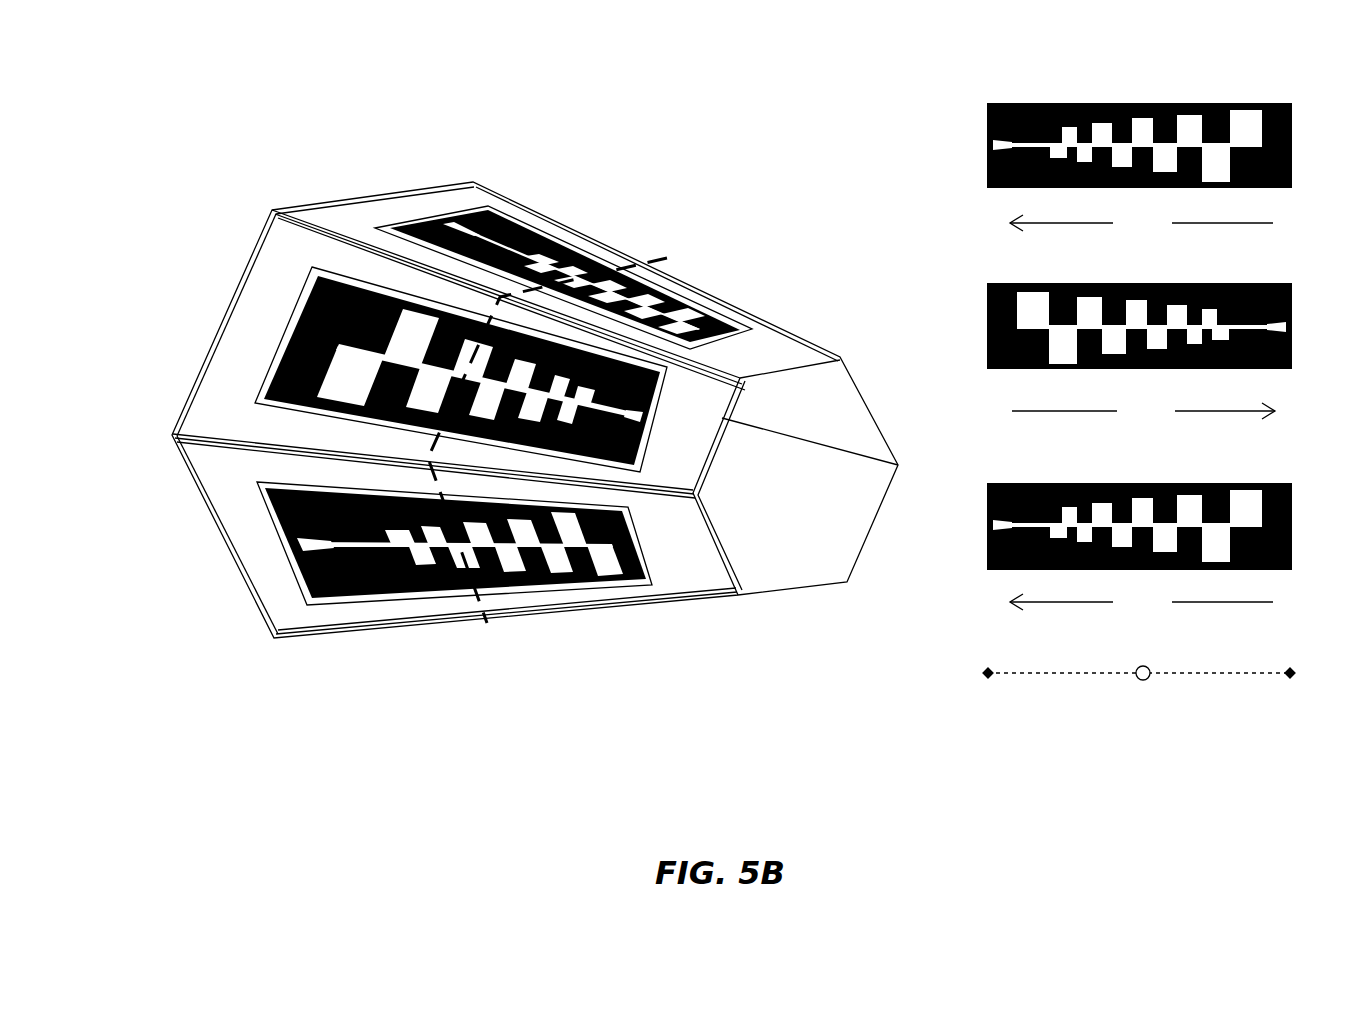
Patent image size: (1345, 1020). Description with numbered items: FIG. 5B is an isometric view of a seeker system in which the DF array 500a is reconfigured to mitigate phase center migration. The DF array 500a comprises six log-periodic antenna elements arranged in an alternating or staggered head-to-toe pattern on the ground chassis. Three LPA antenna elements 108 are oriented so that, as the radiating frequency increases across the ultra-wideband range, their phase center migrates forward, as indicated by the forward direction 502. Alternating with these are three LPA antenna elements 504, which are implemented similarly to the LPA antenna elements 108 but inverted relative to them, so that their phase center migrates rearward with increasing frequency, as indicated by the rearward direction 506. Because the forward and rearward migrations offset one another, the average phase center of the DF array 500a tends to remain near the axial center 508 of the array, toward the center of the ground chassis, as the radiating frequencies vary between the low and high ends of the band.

The DF array 500a is at (226, 88).
The LPA antenna element 108 is at (352, 380).
The LPA antenna element 504 is at (707, 322).
The axial center 508 is at (662, 262).
The forward phase center migration 502 is at (1143, 409).
The rearward phase center migration 506 is at (1141, 411).